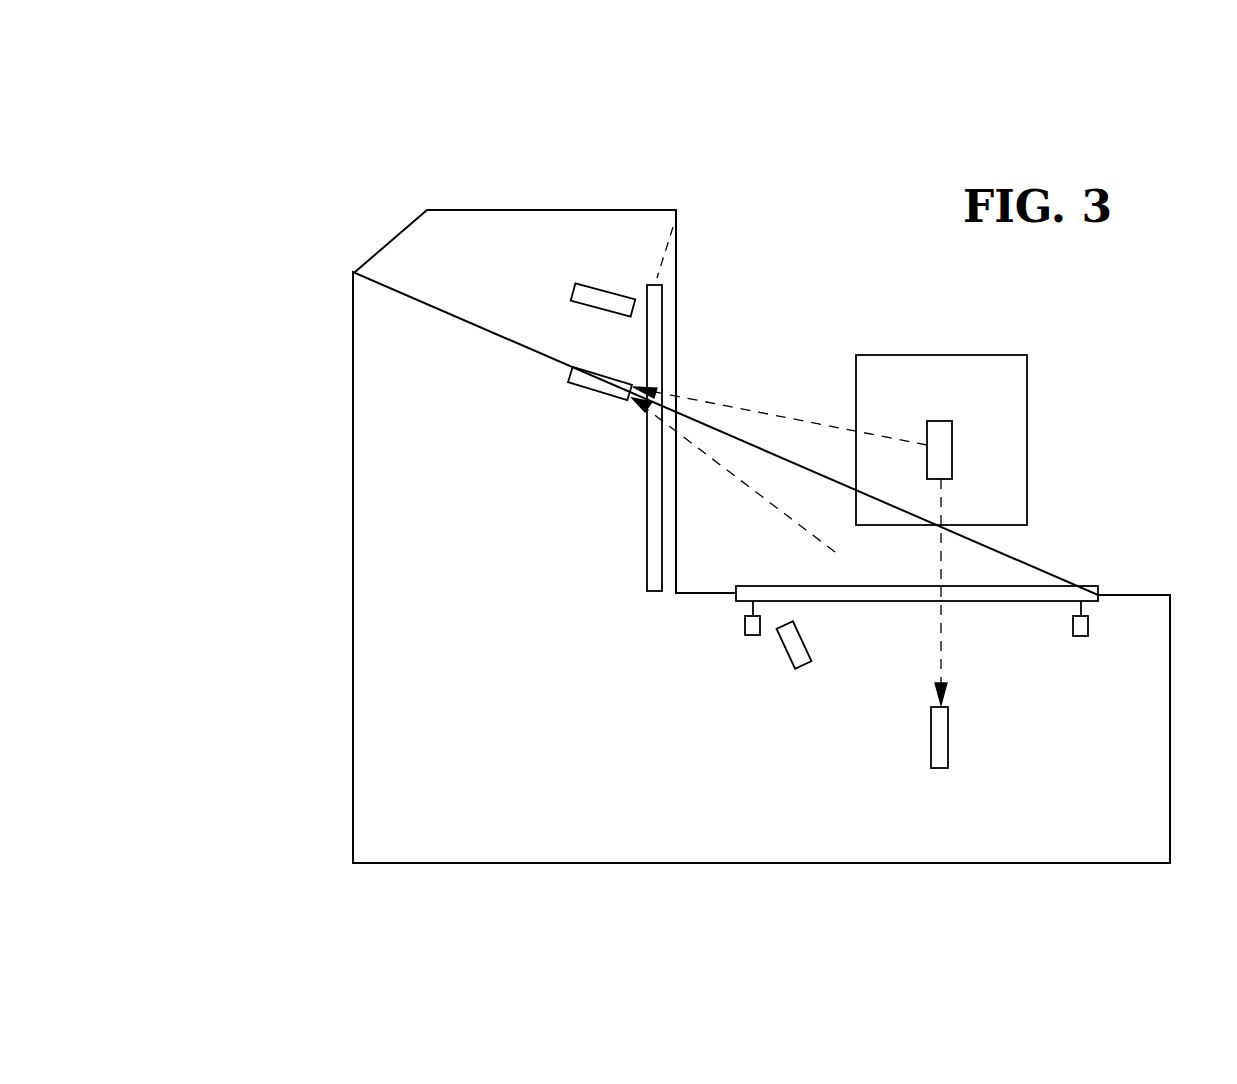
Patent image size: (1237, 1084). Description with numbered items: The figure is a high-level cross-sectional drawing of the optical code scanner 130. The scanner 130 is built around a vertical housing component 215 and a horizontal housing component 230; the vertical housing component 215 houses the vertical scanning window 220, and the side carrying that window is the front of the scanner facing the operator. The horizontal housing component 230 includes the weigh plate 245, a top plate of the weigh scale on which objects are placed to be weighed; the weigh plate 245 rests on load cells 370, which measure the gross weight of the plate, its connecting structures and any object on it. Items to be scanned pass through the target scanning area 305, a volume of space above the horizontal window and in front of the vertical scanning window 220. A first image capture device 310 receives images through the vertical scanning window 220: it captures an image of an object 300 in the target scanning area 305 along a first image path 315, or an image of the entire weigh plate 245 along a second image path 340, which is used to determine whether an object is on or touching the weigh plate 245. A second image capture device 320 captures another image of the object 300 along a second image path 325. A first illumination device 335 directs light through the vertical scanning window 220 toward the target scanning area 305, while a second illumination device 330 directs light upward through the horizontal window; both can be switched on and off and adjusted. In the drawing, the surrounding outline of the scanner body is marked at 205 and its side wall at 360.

The optical code scanner 130 is at (283, 143).
The housing 205 is at (403, 818).
The vertical housing component 215 is at (645, 208).
The vertical scanning window 220 is at (652, 284).
The horizontal housing component 230 is at (1148, 595).
The weigh plate 245 is at (1035, 587).
The object 300 is at (952, 460).
The target scanning area 305 is at (943, 355).
The first image capture device 310 is at (578, 390).
The first image path 315 is at (750, 408).
The second image capture device 320 is at (950, 735).
The second image path 325 is at (940, 637).
The second illumination device 330 is at (780, 656).
The first illumination device 335 is at (600, 310).
The second image path 340 is at (782, 512).
The side wall 360 is at (353, 615).
The load cells 370 is at (745, 626).